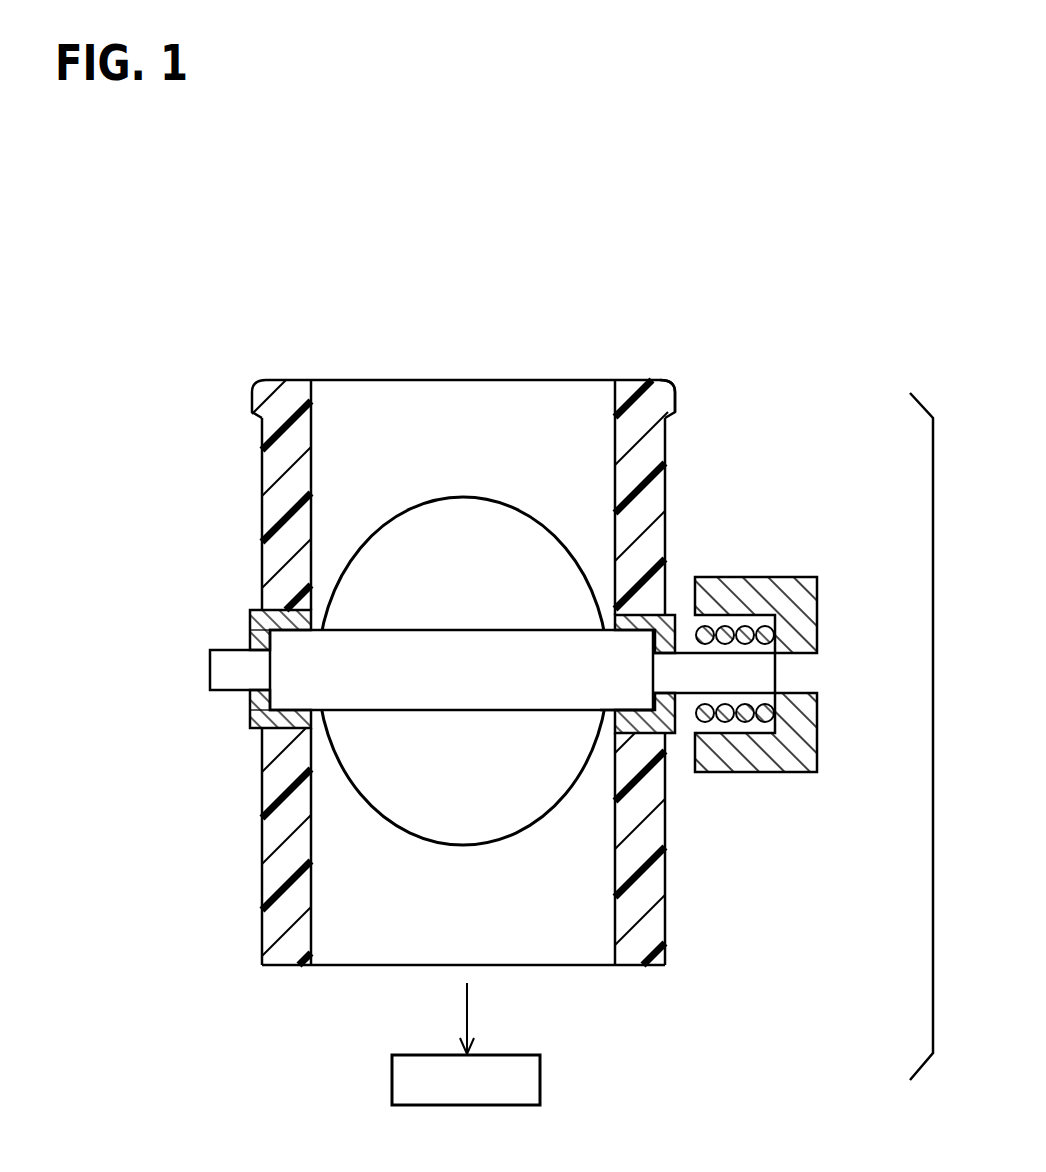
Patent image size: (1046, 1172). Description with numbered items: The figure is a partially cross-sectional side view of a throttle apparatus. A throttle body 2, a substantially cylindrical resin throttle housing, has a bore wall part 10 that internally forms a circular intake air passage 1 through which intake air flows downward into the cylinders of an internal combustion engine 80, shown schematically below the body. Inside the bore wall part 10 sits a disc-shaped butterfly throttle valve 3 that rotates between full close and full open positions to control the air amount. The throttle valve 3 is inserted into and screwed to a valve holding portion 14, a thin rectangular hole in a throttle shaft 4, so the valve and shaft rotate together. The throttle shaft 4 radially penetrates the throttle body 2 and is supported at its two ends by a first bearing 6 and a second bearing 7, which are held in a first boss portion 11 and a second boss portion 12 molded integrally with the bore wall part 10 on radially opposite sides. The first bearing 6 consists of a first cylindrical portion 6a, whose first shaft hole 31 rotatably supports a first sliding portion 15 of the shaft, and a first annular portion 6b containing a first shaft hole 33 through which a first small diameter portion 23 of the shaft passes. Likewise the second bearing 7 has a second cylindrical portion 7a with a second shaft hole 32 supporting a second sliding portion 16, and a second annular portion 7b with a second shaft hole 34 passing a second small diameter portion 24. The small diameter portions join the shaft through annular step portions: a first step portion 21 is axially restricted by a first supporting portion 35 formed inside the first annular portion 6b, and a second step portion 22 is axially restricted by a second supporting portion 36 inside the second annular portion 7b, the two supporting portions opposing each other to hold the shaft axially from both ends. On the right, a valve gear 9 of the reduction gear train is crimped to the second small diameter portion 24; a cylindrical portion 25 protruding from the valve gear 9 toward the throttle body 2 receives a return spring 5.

The intake air passage 1 is at (405, 405).
The throttle body 2 is at (685, 382).
The throttle valve 3 is at (460, 512).
The throttle shaft 4 is at (501, 592).
The valve holding portion 14 is at (461, 670).
The return spring 5 is at (747, 627).
The first bearing 6 is at (213, 707).
The first cylindrical portion 6a is at (258, 732).
The first annular portion 6b is at (223, 692).
The second bearing 7 is at (744, 692).
The second cylindrical portion 7a is at (655, 736).
The second annular portion 7b is at (798, 772).
The valve gear 9 is at (795, 653).
The bore wall part 10 is at (676, 672).
The first boss portion 11 is at (244, 672).
The second boss portion 12 is at (653, 595).
The first sliding portion 15 is at (290, 727).
The second sliding portion 16 is at (612, 700).
The first step portion 21 is at (253, 637).
The second step portion 22 is at (733, 772).
The first small diameter portion 23 is at (220, 667).
The second small diameter portion 24 is at (753, 673).
The cylindrical portion 25 is at (763, 588).
The first shaft hole 31 is at (253, 723).
The second shaft hole 32 is at (645, 808).
The first shaft hole 33 is at (255, 700).
The second shaft hole 34 is at (760, 702).
The first supporting portion 35 is at (280, 592).
The second supporting portion 36 is at (668, 614).
The internal combustion engine 80 is at (540, 1078).